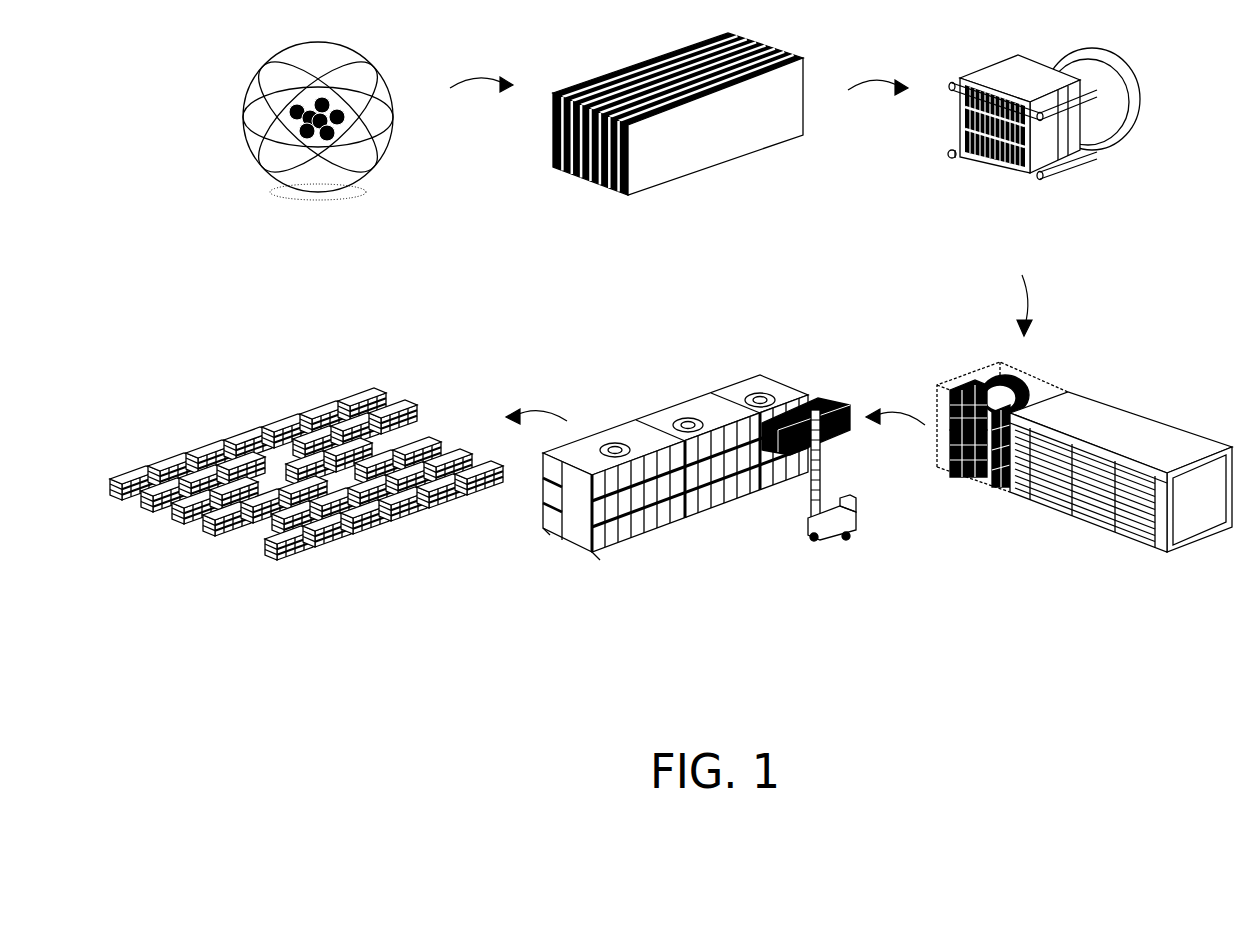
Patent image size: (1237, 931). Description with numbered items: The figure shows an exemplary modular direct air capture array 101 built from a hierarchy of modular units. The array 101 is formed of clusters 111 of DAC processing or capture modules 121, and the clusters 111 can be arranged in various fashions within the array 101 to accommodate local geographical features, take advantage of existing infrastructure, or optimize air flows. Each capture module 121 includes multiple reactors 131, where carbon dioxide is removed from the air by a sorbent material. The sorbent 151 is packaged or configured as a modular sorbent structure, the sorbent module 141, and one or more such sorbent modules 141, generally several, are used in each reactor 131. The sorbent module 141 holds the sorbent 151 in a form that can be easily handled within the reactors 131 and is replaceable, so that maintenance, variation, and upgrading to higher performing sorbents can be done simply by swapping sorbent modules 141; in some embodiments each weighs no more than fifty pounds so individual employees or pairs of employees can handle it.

The DAC array 101 is at (306, 519).
The cluster 111 is at (699, 513).
The capture module 121 is at (1084, 506).
The reactor 131 is at (1060, 158).
The sorbent module 141 is at (714, 150).
The sorbent 151 is at (318, 155).